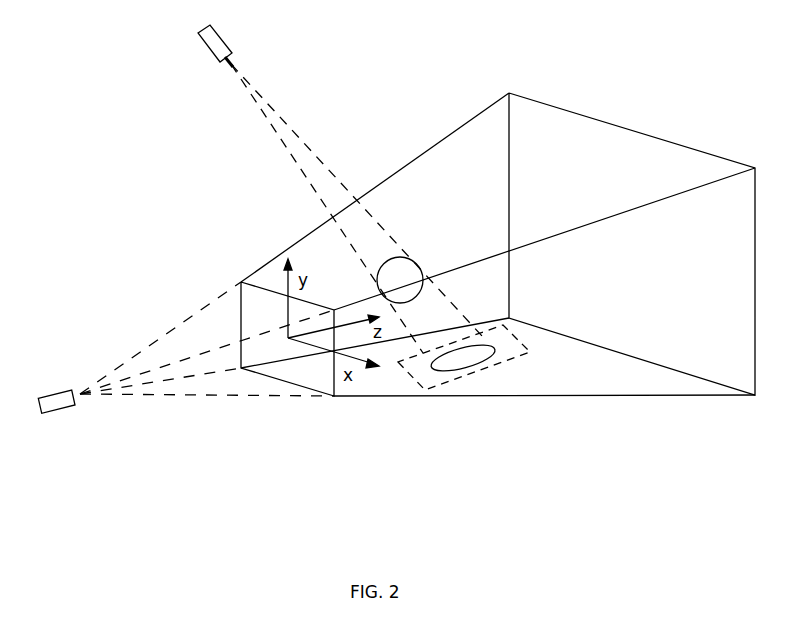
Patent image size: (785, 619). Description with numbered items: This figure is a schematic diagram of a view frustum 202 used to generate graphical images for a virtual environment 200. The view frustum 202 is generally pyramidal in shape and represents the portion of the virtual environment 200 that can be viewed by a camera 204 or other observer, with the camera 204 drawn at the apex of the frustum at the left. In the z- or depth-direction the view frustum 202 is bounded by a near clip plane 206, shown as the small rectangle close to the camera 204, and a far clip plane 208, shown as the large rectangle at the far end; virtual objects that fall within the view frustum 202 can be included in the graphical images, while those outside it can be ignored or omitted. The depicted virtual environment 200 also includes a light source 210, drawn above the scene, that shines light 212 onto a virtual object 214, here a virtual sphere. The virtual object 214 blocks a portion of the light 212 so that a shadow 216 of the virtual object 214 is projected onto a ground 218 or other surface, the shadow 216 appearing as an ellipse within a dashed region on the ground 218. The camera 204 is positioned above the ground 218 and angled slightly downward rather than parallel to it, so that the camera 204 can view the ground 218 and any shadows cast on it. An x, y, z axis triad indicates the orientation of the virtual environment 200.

The virtual environment 200 is at (149, 193).
The view frustum 202 is at (423, 153).
The camera 204 is at (53, 390).
The near clip plane 206 is at (292, 385).
The far clip plane 208 is at (640, 131).
The light source 210 is at (212, 57).
The light 212 is at (288, 152).
The virtual object 214 is at (422, 289).
The shadow 216 is at (481, 363).
The ground 218 is at (507, 323).